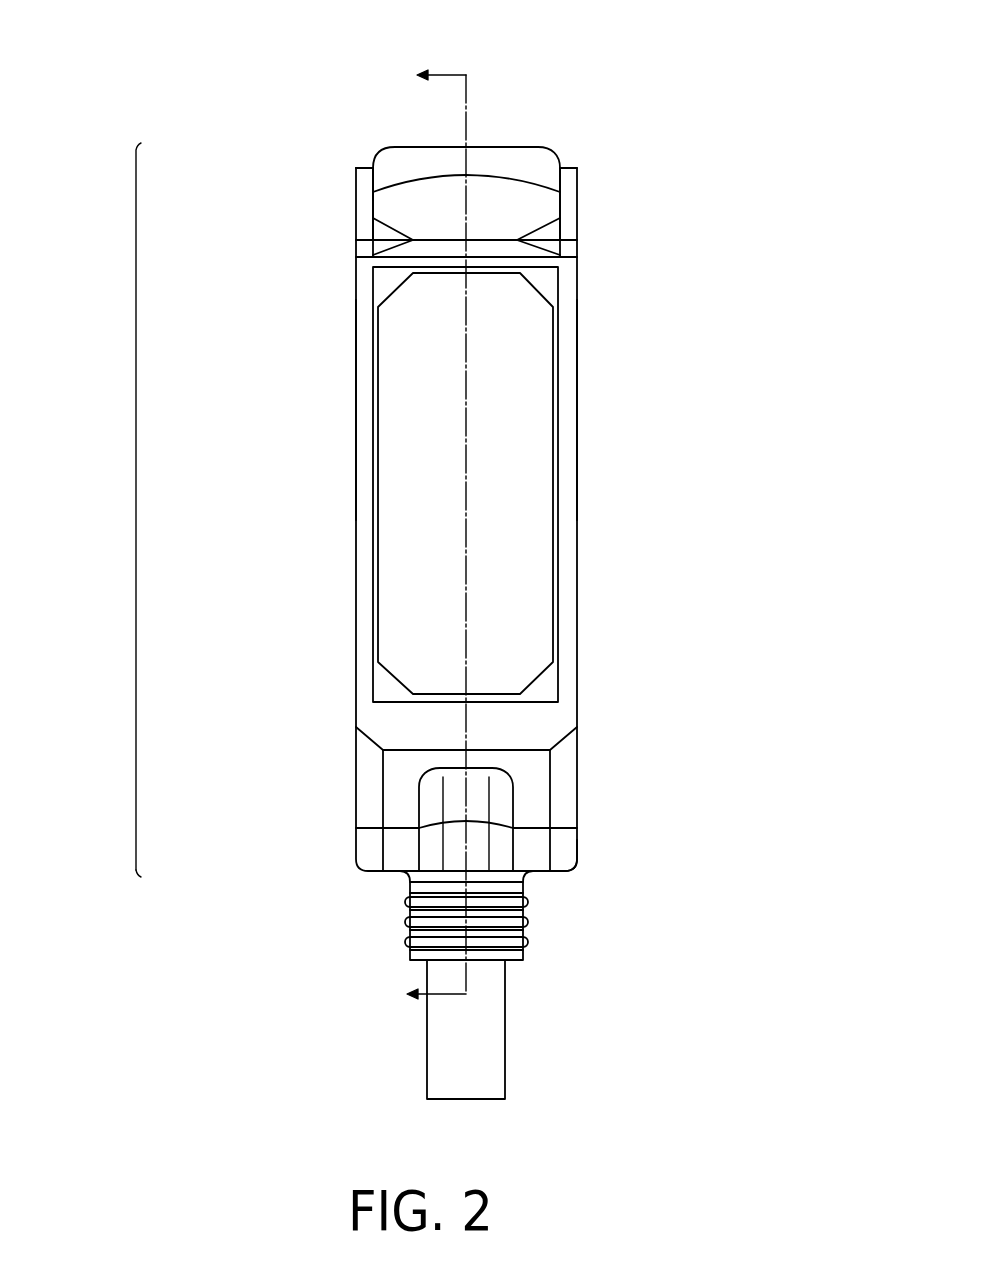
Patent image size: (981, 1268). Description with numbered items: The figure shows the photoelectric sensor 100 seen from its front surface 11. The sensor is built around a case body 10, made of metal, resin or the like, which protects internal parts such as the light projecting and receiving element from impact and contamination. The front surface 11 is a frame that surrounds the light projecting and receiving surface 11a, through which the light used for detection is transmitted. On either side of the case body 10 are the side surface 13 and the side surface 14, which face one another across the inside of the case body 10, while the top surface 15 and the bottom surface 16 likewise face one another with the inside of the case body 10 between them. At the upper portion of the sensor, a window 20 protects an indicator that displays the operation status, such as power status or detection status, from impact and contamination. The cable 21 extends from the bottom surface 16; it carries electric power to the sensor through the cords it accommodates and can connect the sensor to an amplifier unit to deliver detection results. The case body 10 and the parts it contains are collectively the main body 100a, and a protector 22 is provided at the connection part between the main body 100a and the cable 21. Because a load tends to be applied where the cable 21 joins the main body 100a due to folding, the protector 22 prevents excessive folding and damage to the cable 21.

The photoelectric sensor 100 is at (782, 32).
The main body 100a is at (136, 500).
The case body 10 is at (578, 168).
The front surface 11 is at (403, 727).
The light projecting and receiving surface 11a is at (425, 565).
The side surface 13 is at (578, 415).
The side surface 14 is at (356, 408).
The top surface 15 is at (363, 168).
The bottom surface 16 is at (557, 877).
The window 20 is at (490, 160).
The cable 21 is at (450, 1048).
The protector 22 is at (407, 902).